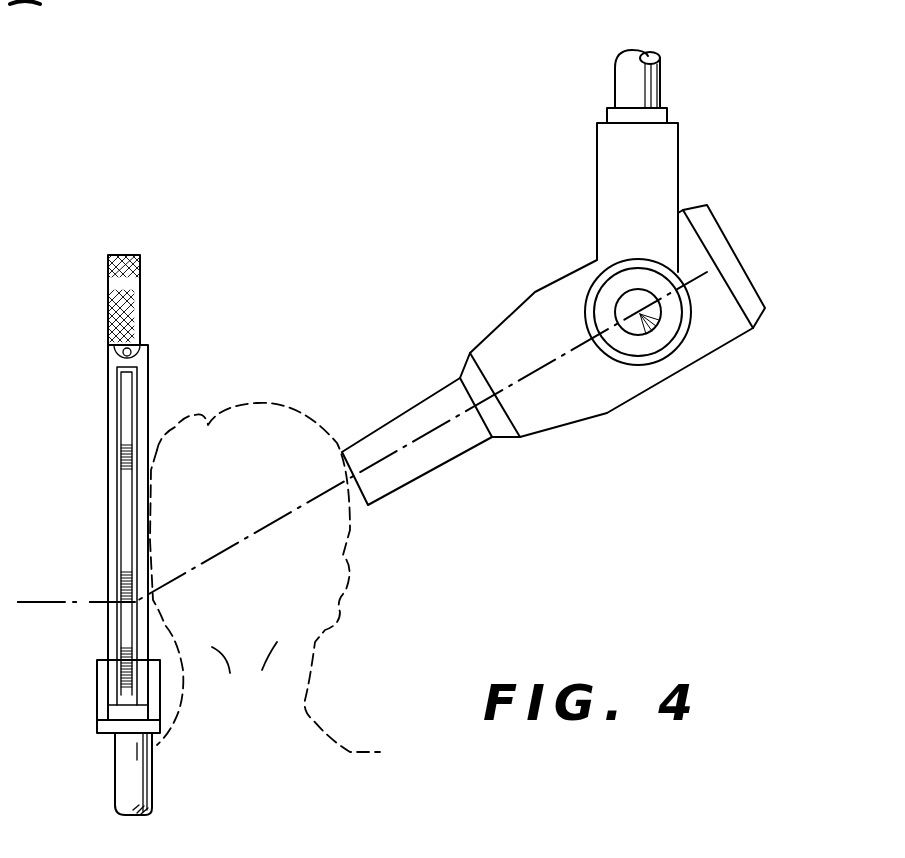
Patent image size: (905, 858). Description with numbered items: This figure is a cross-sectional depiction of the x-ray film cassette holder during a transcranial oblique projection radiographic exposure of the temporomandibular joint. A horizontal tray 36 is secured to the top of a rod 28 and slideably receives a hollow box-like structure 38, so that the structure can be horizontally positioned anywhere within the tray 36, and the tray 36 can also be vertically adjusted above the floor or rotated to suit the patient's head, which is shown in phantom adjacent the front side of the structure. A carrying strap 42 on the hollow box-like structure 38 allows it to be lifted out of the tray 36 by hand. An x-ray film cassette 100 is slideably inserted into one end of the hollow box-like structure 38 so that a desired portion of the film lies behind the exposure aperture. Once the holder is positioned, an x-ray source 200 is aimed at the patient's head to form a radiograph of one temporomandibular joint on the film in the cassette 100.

The carrying strap 42 is at (113, 290).
The hollow box-like structure 38 is at (110, 358).
The x-ray film cassette 100 is at (128, 408).
The tray 36 is at (100, 689).
The rod 28 is at (125, 752).
The x-ray source 200 is at (615, 413).